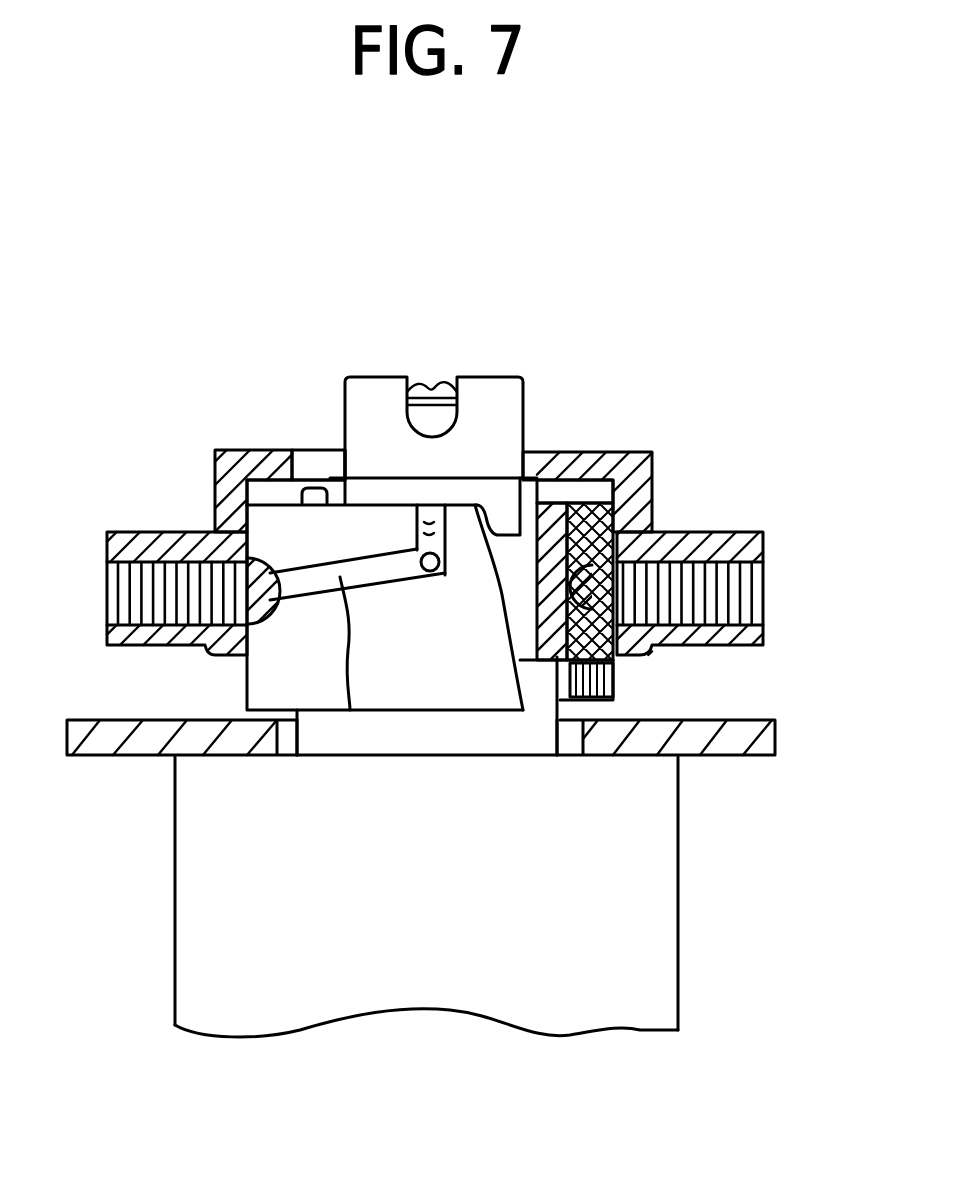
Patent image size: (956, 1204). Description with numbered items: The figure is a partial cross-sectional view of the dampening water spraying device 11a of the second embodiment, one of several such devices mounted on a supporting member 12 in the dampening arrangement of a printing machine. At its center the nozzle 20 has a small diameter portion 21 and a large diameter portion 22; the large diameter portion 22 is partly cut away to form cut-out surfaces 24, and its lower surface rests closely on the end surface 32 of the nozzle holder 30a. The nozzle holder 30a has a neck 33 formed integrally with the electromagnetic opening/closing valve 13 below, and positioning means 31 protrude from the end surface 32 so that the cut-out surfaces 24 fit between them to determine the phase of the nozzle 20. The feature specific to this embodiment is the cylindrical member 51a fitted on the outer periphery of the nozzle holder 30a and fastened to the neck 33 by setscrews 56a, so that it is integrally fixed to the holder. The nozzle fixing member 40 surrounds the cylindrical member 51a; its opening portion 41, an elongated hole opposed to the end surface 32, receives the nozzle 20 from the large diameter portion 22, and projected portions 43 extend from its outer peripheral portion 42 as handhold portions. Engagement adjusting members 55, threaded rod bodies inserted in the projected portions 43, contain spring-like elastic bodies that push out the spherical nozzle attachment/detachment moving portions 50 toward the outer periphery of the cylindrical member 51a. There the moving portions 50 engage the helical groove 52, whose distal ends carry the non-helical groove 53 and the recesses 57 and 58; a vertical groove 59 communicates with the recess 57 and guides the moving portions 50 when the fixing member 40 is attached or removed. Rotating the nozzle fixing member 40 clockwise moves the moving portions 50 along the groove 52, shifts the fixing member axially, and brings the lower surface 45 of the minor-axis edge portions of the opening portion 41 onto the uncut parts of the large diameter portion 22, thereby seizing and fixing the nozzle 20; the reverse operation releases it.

The spraying device 11a is at (242, 302).
The nozzle 20 is at (513, 352).
The small diameter portion 21 is at (512, 395).
The large diameter portion 22 is at (377, 490).
The end surface 32 is at (503, 518).
The opening portion 41 is at (306, 462).
The positioning means 31 is at (338, 452).
The cut-out surfaces 24 is at (645, 452).
The cylindrical member 51a is at (600, 508).
The nozzle holder 30a is at (648, 532).
The nozzle fixing member 40 is at (215, 456).
The lower surface 45 is at (273, 492).
The outer peripheral portion 42 is at (213, 493).
The projected portions 43 is at (115, 637).
The engagement adjusting members 55 is at (145, 591).
The recess 58 is at (265, 560).
The vertical grooves 59 is at (427, 518).
The groove 53 is at (397, 566).
The recess 57 is at (441, 574).
The nozzle attachment/detachment moving portions 50 is at (265, 625).
The helical groove 52 is at (355, 712).
The setscrews 56a is at (614, 678).
The supporting member 12 is at (96, 742).
The neck 33 is at (455, 737).
The electromagnetic opening/closing valve 13 is at (645, 952).